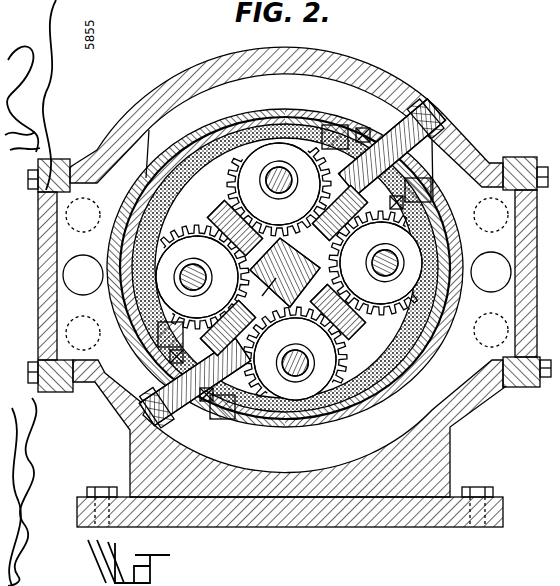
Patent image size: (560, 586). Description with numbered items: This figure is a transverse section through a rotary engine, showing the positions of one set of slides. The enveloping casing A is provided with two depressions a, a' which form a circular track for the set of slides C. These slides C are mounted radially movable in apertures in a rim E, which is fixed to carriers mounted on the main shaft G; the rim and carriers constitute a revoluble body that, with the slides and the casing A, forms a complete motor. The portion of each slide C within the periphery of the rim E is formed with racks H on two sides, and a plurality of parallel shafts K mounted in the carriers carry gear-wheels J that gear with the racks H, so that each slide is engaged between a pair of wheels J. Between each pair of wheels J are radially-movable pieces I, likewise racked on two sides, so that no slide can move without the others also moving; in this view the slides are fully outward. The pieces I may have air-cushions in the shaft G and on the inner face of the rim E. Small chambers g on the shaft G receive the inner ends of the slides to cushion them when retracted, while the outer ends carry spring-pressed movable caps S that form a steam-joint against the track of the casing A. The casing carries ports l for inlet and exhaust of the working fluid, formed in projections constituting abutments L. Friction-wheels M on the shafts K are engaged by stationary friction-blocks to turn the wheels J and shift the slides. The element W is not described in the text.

The casing A is at (140, 112).
The rim E is at (234, 122).
The depression a is at (271, 95).
The depression a' is at (305, 450).
The gear-wheel J is at (398, 300).
The shaft K is at (268, 178).
The slide C is at (394, 129).
The movable cap S is at (432, 117).
The friction-wheel M is at (294, 298).
The gland W is at (346, 137).
The small chamber g is at (300, 256).
The main shaft G is at (260, 292).
The rack H is at (334, 224).
The radially-movable piece I is at (218, 212).
The port l is at (279, 255).
The abutment L is at (110, 243).